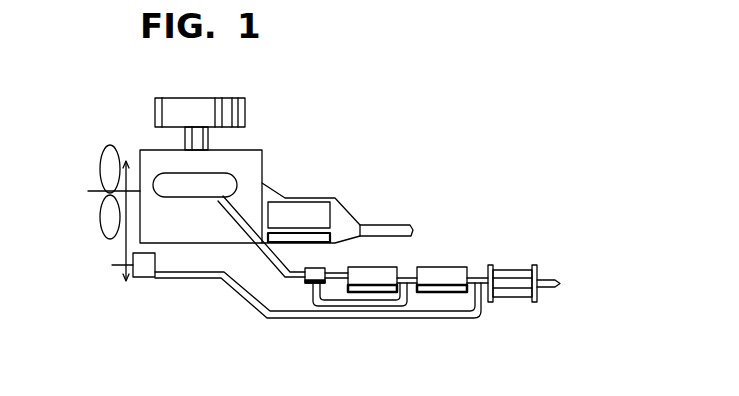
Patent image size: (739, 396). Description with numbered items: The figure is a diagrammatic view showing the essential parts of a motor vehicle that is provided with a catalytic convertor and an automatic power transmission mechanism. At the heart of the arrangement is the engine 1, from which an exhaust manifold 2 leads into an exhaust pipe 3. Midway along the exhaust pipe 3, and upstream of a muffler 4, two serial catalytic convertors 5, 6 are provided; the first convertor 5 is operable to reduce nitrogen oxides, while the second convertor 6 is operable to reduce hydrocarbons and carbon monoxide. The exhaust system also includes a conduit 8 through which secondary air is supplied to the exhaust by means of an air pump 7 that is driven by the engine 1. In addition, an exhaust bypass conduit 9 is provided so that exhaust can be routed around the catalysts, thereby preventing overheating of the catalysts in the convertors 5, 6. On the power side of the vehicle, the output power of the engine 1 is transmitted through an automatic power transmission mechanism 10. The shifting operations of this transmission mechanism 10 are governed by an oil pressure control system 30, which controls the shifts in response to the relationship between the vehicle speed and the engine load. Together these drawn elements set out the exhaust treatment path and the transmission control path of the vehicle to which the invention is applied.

The engine 1 is at (140, 150).
The exhaust manifold 2 is at (186, 190).
The exhaust pipe 3 is at (272, 270).
The muffler 4 is at (515, 270).
The catalytic convertor 5 is at (367, 248).
The catalytic convertor 6 is at (440, 268).
The air pump 7 is at (147, 279).
The conduit 8 is at (302, 320).
The exhaust bypass conduit 9 is at (370, 307).
The automatic power transmission mechanism 10 is at (310, 212).
The oil pressure control system 30 is at (333, 238).